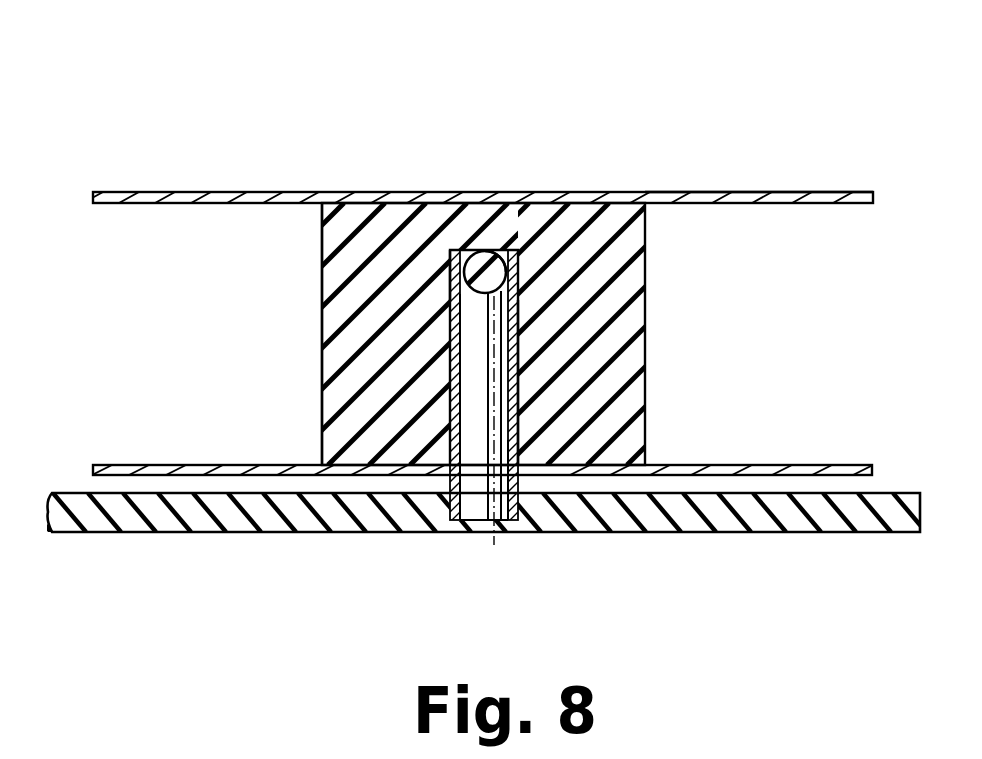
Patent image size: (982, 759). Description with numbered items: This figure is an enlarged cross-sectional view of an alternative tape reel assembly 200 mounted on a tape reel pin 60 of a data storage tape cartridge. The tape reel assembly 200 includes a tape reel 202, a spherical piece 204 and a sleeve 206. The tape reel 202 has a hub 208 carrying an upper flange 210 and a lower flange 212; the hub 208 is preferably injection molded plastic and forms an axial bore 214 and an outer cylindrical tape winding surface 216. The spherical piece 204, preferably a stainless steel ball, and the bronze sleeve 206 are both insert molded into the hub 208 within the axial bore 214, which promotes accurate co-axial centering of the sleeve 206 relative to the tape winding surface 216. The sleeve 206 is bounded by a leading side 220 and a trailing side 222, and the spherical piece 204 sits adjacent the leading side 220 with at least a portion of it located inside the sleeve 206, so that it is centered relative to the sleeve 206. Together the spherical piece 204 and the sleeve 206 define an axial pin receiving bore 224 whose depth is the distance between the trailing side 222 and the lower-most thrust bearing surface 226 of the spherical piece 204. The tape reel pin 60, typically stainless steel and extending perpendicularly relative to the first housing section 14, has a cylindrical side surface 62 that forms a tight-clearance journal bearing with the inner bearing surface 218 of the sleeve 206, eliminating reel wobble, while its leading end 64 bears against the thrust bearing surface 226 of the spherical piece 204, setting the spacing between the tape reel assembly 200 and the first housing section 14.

The tape reel assembly 200 is at (599, 91).
The tape reel 202 is at (758, 188).
The spherical piece 204 is at (486, 252).
The sleeve 206 is at (524, 374).
The hub 208 is at (641, 268).
The upper flange 210 is at (844, 192).
The lower flange 212 is at (820, 466).
The axial bore 214 is at (455, 250).
The outer cylindrical surface 216 is at (322, 243).
The inner bearing surface 218 is at (456, 400).
The leading side 220 is at (451, 258).
The trailing side 222 is at (518, 518).
The pin receiving bore 224 is at (462, 445).
The thrust bearing surface 226 is at (450, 310).
The tape reel pin 60 is at (488, 533).
The cylindrical side surface 62 is at (466, 344).
The leading end 64 is at (506, 276).
The first housing section 14 is at (222, 532).